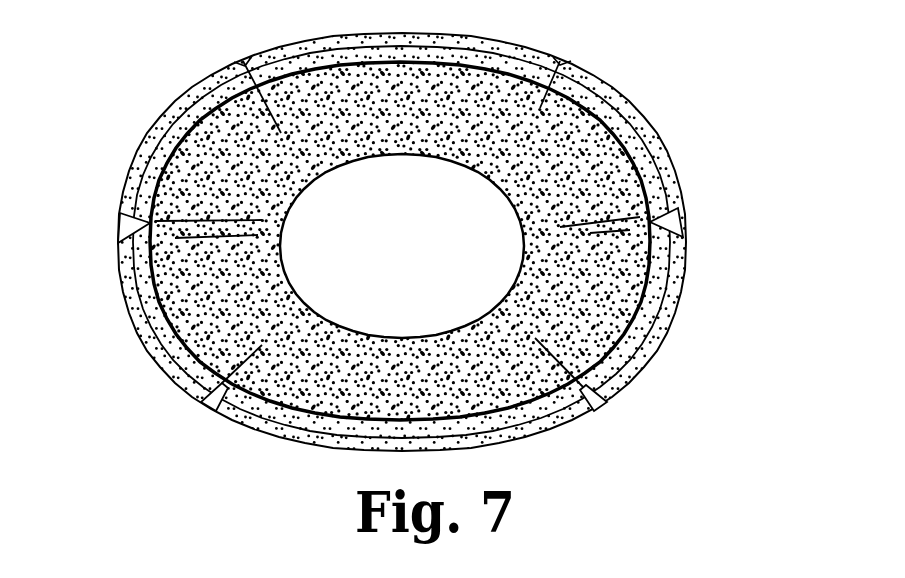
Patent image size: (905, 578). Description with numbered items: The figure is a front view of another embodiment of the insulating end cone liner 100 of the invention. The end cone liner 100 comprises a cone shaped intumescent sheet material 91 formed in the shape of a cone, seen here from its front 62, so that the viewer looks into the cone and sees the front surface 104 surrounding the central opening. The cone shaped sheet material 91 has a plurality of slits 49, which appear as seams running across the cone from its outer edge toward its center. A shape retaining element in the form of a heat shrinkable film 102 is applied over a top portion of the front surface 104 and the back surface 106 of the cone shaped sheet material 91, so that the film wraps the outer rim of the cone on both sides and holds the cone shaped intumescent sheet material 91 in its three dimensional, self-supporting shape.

The insulating end cone liner 100 is at (622, 64).
The heat shrinkable film 102 is at (185, 143).
The cone shaped intumescent sheet material 91 is at (600, 148).
The front surface 104 is at (628, 258).
The back surface 106 is at (668, 324).
The front 62 is at (183, 277).
The slits 49 is at (585, 398).